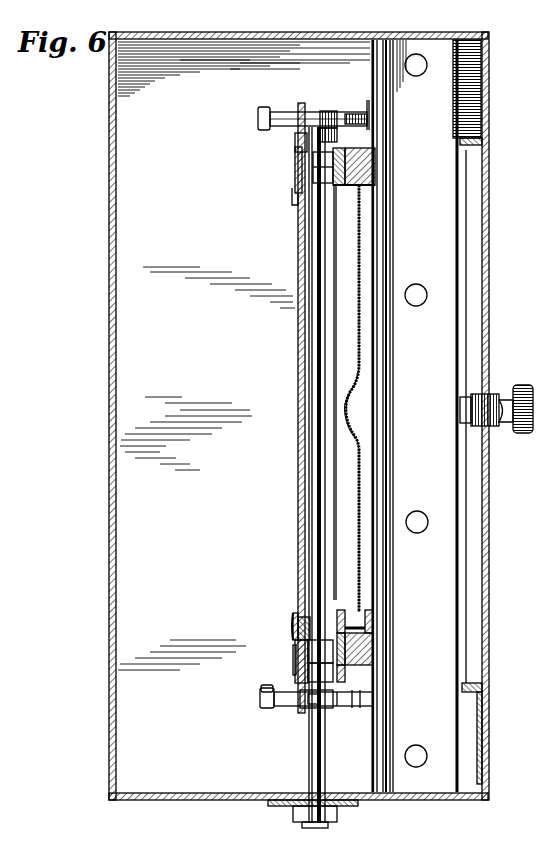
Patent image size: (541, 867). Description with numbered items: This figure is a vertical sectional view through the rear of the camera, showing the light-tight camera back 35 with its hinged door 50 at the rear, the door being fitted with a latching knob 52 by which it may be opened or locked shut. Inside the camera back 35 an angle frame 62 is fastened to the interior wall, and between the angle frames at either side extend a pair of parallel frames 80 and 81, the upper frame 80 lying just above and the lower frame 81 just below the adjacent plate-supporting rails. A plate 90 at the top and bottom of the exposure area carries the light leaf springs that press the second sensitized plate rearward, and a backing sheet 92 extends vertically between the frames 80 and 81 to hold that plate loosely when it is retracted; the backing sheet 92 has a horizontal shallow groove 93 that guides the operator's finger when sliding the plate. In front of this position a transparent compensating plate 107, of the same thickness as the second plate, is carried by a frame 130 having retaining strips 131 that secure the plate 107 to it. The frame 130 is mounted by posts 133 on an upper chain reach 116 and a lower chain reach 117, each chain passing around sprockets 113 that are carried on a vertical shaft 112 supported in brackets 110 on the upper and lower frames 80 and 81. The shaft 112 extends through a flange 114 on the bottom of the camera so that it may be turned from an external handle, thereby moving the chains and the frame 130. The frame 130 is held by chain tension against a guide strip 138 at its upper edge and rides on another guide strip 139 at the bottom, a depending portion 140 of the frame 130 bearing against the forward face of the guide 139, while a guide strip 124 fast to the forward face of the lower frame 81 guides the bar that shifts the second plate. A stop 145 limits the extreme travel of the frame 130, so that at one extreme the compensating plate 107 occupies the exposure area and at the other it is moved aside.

The camera back 35 is at (103, 125).
The door 50 is at (489, 259).
The latching knob 52 is at (512, 395).
The angle frame 62 is at (440, 312).
The upper frame 80 is at (366, 150).
The lower frame 81 is at (366, 646).
The plate 90 is at (338, 188).
The backing sheet 92 is at (361, 278).
The groove 93 is at (353, 396).
The compensating plate 107 is at (297, 336).
The bracket 110 is at (292, 143).
The shaft 112 is at (312, 449).
The sprocket 113 is at (329, 113).
The flange 114 is at (293, 809).
The upper chain reach 116 is at (360, 110).
The lower chain reach 117 is at (262, 698).
The guide strip 124 is at (344, 611).
The frame 130 is at (298, 670).
The retaining strip 131 is at (293, 615).
The post 133 is at (283, 114).
The guide strip 138 is at (301, 163).
The guide strip 139 is at (295, 632).
The depending portion 140 is at (298, 658).
The stop 145 is at (316, 652).